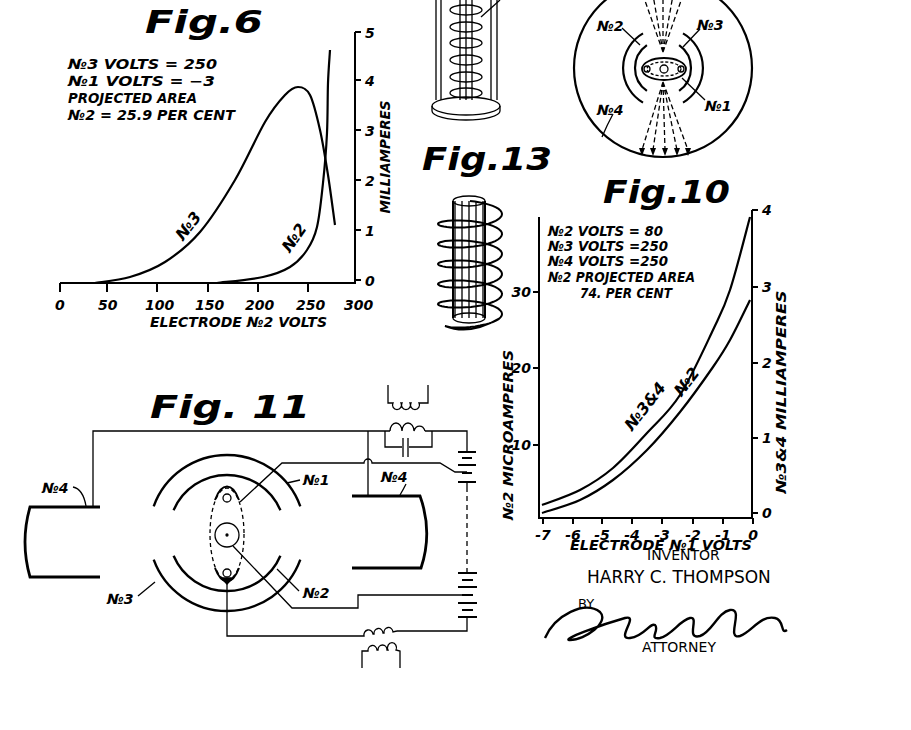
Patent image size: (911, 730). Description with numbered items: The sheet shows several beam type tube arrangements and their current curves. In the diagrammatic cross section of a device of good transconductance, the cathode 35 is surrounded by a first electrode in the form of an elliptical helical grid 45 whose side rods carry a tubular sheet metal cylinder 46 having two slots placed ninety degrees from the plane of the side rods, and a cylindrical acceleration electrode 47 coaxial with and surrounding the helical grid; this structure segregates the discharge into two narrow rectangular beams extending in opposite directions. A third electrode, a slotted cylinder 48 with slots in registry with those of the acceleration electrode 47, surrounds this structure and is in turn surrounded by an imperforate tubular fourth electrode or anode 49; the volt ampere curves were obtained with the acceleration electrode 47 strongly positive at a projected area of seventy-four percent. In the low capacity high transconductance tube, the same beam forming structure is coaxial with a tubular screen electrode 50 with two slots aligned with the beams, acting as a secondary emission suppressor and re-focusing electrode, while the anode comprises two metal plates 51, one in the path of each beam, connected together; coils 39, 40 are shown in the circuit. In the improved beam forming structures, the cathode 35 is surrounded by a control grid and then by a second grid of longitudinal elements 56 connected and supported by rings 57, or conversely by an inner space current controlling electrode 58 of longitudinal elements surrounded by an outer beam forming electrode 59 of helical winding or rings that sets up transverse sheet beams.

In FIG. 13, the cathode 35 is at (465, 197).
In FIG. 11, the output coil 39 is at (398, 640).
In FIG. 11, the input coil 40 is at (428, 413).
In FIG. 11, the elliptical helical grid 45 is at (231, 496).
In FIG. 9, the tubular sheet metal cylinder 46 is at (687, 68).
In FIG. 11, the tubular sheet metal cylinder 46 is at (222, 577).
In FIG. 9, the acceleration electrode 47 is at (697, 78).
In FIG. 11, the acceleration electrode 47 is at (216, 594).
In FIG. 9, the slotted cylinder 48 is at (685, 105).
In FIG. 9, the anode 49 is at (747, 36).
In FIG. 11, the screen electrode 50 is at (175, 596).
In FIG. 11, the metal plates 51 is at (56, 578).
In FIG. 12, the longitudinal elements 56 is at (497, 40).
In FIG. 12, the rings 57 is at (500, 104).
In FIG. 13, the inner space current controlling electrode 58 is at (455, 226).
In FIG. 13, the outer beam forming electrode 59 is at (446, 262).